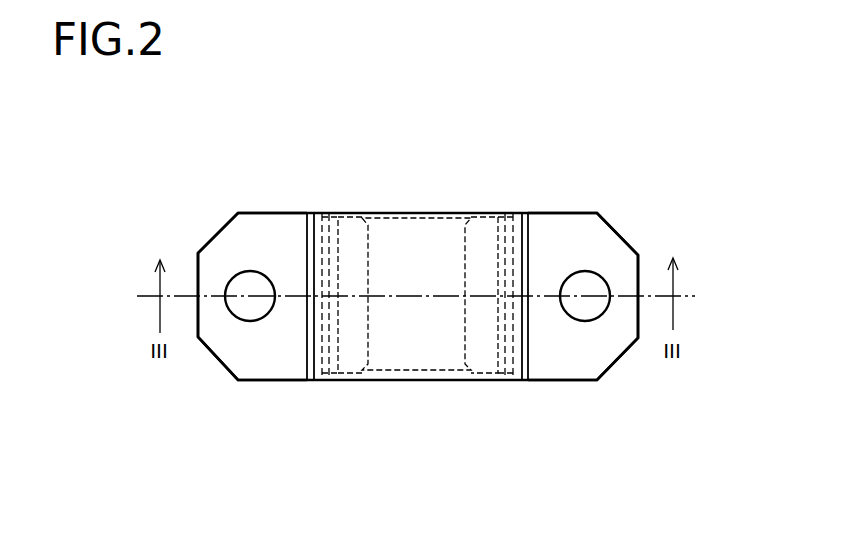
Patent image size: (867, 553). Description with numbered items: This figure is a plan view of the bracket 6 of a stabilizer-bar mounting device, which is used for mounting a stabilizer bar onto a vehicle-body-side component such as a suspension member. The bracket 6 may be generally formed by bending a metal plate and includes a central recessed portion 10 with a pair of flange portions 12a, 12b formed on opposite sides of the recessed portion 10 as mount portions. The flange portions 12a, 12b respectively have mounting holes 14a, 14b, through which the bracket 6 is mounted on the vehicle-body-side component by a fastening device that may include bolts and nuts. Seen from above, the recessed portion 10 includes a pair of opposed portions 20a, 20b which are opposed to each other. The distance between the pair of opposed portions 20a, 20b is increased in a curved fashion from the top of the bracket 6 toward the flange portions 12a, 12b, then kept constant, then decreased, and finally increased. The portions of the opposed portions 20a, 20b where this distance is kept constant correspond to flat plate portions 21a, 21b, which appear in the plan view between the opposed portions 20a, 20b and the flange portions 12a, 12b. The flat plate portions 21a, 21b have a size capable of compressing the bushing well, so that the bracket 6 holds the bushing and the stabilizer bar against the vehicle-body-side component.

The bracket 6 is at (599, 178).
The recessed portion 10 is at (412, 198).
The flange portion 12a is at (225, 247).
The flange portion 12b is at (617, 250).
The mounting hole 14a is at (248, 272).
The mounting hole 14b is at (587, 313).
The opposed portion 20a is at (350, 198).
The opposed portion 20b is at (487, 198).
The flat plate portion 21a is at (352, 363).
The flat plate portion 21b is at (485, 363).